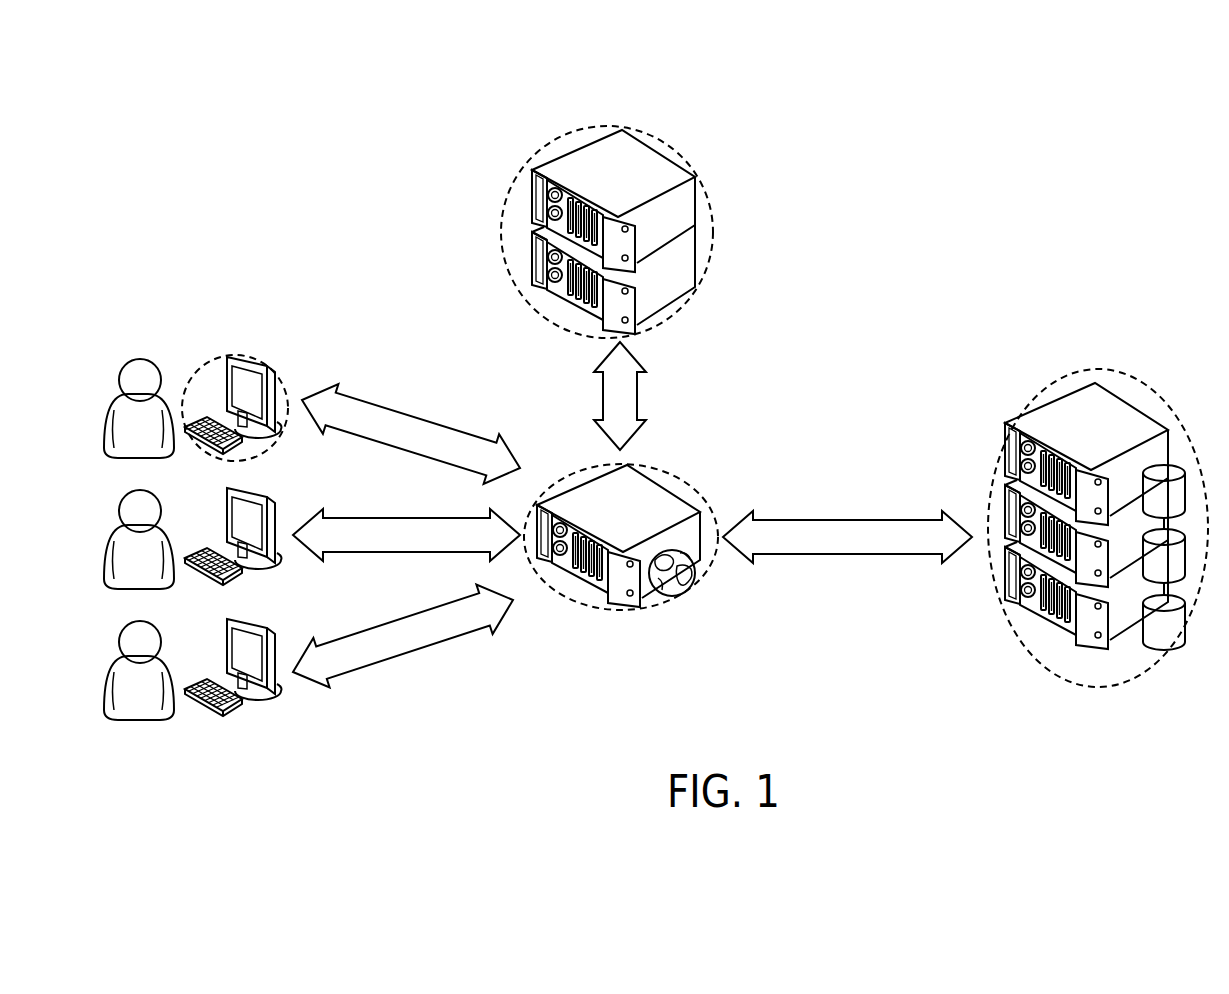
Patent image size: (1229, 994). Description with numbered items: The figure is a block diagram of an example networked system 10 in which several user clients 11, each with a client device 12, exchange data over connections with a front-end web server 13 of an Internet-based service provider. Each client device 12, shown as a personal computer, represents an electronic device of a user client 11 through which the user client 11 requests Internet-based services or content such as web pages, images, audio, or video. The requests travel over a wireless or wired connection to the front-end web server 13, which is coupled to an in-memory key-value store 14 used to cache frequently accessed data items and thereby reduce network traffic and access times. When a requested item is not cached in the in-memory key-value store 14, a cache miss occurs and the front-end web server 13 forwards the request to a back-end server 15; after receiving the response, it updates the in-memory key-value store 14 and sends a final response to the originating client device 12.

The networked system 10 is at (846, 88).
The user client 11 is at (141, 360).
The client device 12 is at (236, 356).
The front-end web server 13 is at (684, 470).
The in-memory key-value store 14 is at (645, 133).
The back-end server 15 is at (1105, 372).